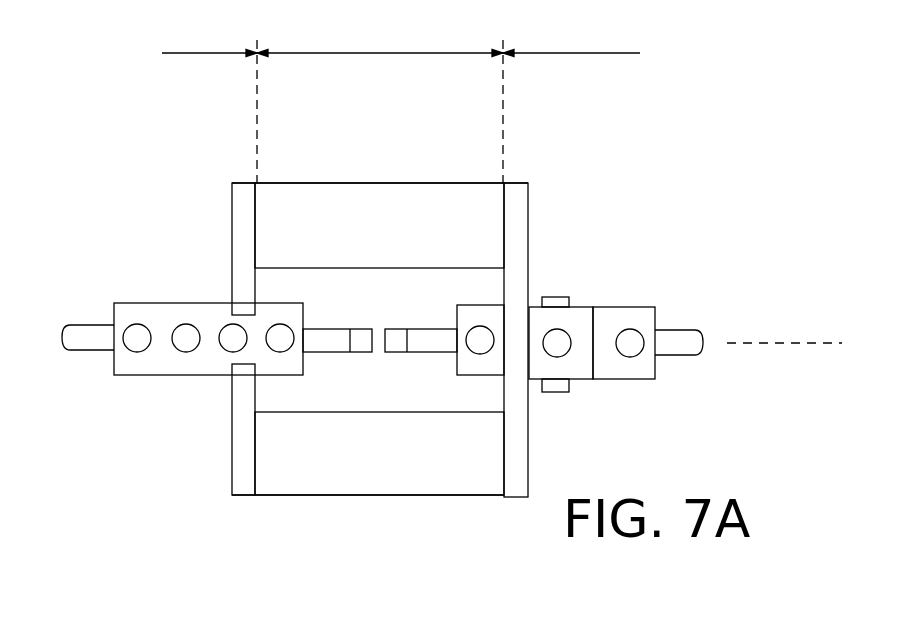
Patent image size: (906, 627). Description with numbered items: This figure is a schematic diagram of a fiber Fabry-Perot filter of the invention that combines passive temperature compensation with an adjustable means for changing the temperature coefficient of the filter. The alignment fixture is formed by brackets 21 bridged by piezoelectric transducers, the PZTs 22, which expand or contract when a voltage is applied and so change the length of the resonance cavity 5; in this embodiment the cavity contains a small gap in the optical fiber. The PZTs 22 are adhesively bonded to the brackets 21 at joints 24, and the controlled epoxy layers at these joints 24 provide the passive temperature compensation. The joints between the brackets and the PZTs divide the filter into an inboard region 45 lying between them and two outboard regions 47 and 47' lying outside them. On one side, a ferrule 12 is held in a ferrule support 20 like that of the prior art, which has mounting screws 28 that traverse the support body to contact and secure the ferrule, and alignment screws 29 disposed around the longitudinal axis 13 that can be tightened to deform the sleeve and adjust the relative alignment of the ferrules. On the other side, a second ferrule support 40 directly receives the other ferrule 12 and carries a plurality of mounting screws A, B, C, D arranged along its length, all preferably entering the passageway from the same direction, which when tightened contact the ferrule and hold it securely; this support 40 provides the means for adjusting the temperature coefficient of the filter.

The outboard region 47 is at (209, 100).
The inboard region 45 is at (380, 37).
The outboard region 47' is at (571, 100).
The brackets 21 is at (529, 208).
The PZTs 22 is at (360, 194).
The joints 24 is at (259, 182).
The second ferrule support 40 is at (113, 362).
The mounting screw A is at (131, 318).
The mounting screw B is at (180, 318).
The mounting screw C is at (227, 318).
The mounting screw D is at (266, 316).
The resonance cavity 5 is at (398, 358).
The mounting screws 28 is at (494, 306).
The alignment screws 29 is at (574, 360).
The ferrule support 20 is at (647, 327).
The ferrule 12 is at (85, 328).
The longitudinal axis 13 is at (760, 345).